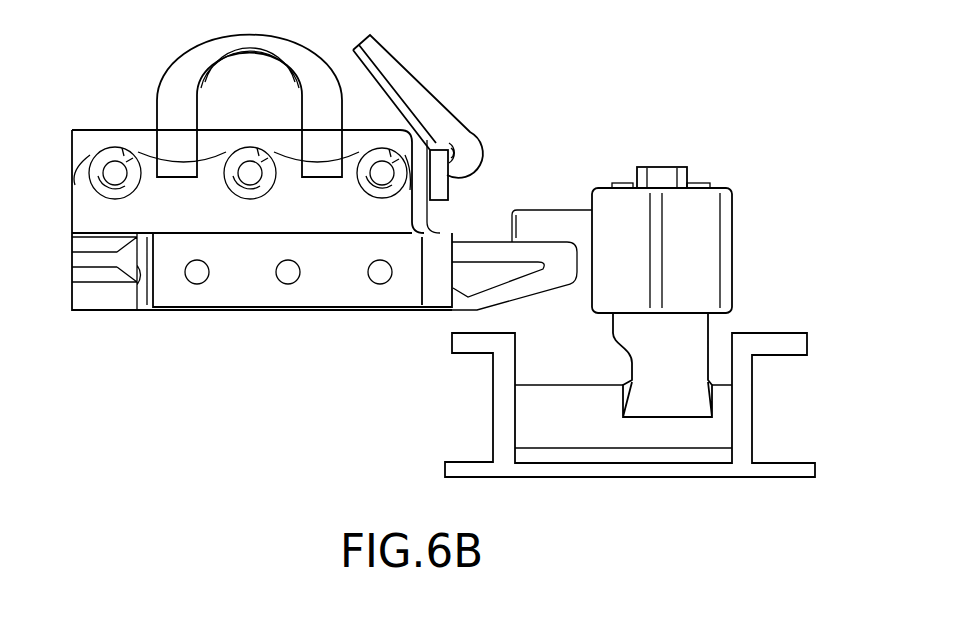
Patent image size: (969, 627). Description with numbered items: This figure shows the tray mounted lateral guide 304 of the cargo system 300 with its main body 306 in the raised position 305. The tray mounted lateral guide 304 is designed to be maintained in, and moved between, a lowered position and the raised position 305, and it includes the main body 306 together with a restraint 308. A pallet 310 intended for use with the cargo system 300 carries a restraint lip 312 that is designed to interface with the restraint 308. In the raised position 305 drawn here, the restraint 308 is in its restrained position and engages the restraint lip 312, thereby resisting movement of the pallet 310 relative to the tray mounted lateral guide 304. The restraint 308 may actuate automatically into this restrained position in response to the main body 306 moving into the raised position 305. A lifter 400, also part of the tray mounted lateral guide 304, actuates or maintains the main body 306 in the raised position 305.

The cargo system 300 is at (823, 162).
The tray mounted lateral guide 304 is at (738, 296).
The raised position 305 is at (608, 195).
The main body 306 is at (718, 205).
The restraint 308 is at (523, 232).
The pallet 310 is at (113, 142).
The restraint lip 312 is at (553, 263).
The lifter 400 is at (673, 363).